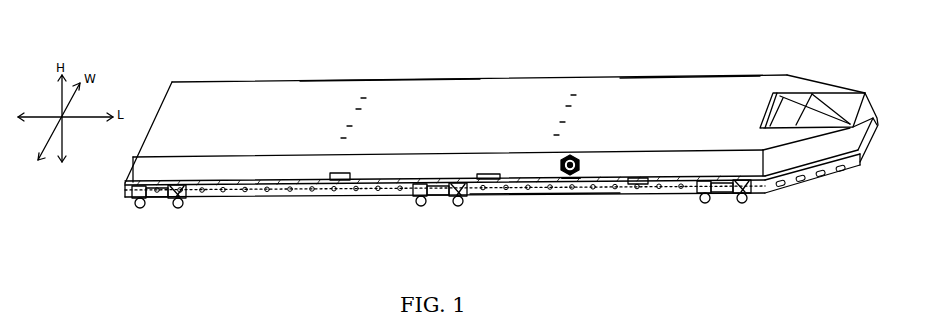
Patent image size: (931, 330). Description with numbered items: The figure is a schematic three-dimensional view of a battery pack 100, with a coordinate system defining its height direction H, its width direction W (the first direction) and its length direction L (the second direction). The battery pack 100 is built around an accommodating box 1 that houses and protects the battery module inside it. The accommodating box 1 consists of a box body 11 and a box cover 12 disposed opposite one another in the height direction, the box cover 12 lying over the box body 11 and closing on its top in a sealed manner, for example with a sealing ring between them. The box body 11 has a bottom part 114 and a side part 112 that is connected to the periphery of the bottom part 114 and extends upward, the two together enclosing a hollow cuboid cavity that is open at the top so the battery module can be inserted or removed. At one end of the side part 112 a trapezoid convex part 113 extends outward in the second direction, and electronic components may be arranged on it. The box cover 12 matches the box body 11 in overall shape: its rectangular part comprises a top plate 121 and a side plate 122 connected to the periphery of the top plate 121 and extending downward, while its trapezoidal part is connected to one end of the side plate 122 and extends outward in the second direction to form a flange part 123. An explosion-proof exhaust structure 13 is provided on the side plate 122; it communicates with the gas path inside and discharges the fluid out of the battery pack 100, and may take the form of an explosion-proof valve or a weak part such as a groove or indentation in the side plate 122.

The battery pack 100 is at (355, 60).
The accommodating box 1 is at (227, 97).
The box cover 12 is at (435, 92).
The top plate 121 is at (652, 95).
The flange part 123 is at (812, 83).
The box body 11 is at (282, 195).
The side plate 122 is at (338, 173).
The side part 112 is at (495, 193).
The explosion-proof exhaust structure 13 is at (577, 181).
The bottom part 114 is at (638, 193).
The convex part 113 is at (803, 175).